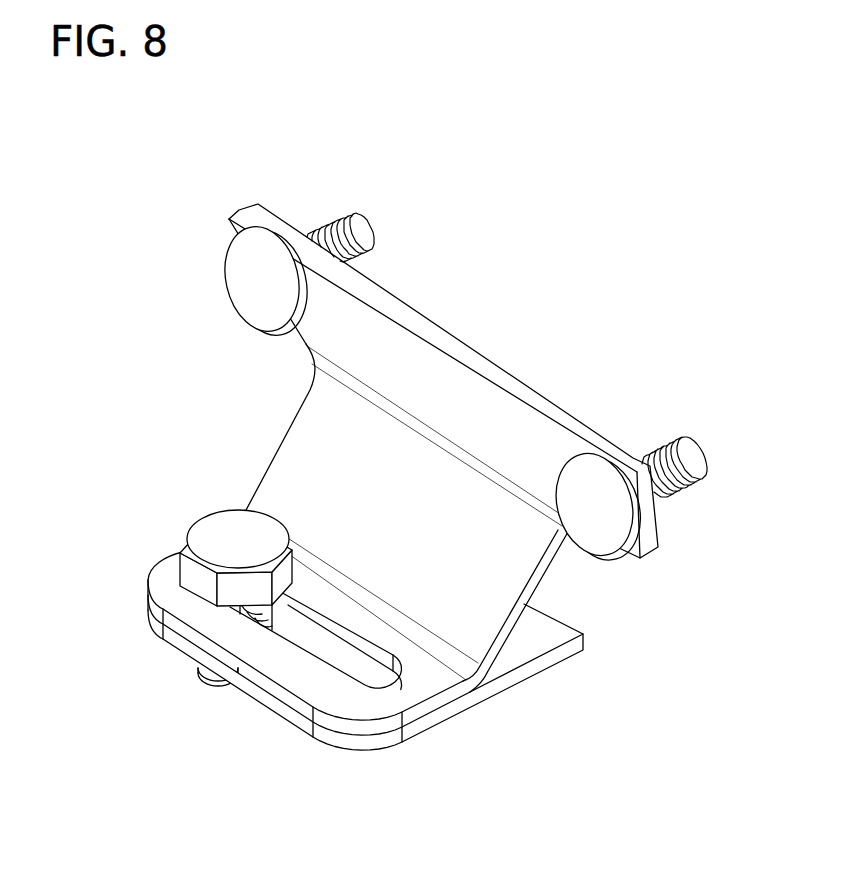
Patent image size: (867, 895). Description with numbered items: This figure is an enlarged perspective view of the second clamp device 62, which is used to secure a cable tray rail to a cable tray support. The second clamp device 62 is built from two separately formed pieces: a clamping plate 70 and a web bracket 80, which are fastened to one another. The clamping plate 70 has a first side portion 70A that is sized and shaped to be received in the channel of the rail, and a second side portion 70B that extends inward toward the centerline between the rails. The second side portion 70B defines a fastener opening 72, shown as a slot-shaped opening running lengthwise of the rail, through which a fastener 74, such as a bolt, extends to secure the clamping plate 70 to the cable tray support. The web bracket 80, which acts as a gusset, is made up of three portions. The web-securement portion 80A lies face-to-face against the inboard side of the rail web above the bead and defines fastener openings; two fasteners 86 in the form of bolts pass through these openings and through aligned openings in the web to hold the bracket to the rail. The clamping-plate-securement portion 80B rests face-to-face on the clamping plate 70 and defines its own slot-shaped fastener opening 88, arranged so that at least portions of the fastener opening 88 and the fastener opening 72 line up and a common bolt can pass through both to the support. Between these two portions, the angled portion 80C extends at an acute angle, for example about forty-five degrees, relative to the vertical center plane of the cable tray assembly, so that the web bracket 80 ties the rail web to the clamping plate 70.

The second clamp device 62 is at (583, 237).
The clamping plate 70 is at (427, 711).
The first side portion 70A is at (553, 627).
The second side portion 70B is at (347, 740).
The fastener opening 72 is at (333, 652).
The fastener 74 is at (215, 540).
The web bracket 80 is at (283, 417).
The web-securement portion 80A is at (498, 416).
The clamping-plate-securement portion 80B is at (407, 690).
The angled portion 80C is at (487, 568).
The fastener 86 is at (337, 228).
The fastener opening 88 is at (333, 652).